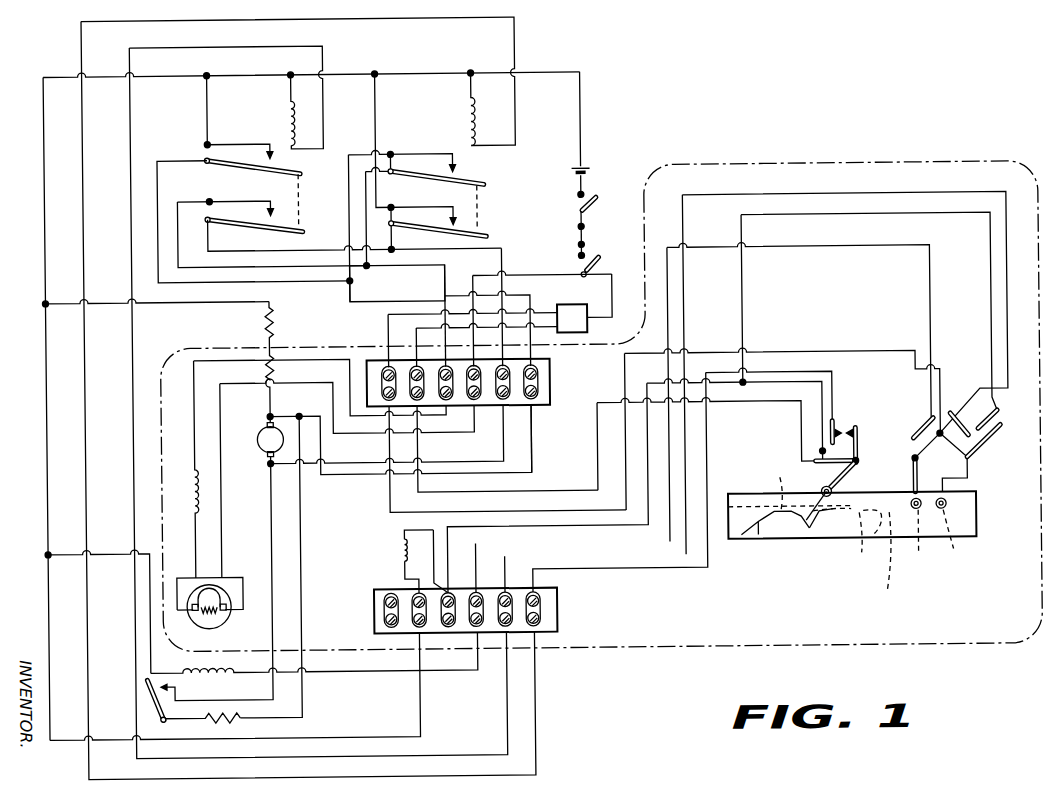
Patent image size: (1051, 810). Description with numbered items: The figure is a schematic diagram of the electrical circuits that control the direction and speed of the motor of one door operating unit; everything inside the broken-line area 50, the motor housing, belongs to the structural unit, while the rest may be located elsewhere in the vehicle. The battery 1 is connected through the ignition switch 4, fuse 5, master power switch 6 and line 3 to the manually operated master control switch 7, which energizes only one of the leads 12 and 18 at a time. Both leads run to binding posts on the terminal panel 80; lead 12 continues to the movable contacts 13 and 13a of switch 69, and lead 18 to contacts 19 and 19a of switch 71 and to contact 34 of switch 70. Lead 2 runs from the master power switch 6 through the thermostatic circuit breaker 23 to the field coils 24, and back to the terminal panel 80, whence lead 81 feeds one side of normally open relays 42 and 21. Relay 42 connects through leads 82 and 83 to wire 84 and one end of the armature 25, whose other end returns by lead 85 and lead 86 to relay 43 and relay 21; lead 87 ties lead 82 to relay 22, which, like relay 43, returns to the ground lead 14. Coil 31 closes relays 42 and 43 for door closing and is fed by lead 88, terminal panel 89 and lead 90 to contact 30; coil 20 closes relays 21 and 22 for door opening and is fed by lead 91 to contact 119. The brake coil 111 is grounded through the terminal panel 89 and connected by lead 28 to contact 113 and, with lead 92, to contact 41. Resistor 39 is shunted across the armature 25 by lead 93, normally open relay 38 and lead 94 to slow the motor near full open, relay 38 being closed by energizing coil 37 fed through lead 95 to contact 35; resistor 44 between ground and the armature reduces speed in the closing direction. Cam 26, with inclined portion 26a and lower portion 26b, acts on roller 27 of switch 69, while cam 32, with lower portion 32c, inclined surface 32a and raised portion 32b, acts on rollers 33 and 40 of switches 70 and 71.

The battery 1 is at (589, 168).
The lead 2 is at (541, 275).
The line 3 is at (613, 290).
The ignition switch 4 is at (599, 202).
The fuse 5 is at (578, 243).
The master power switch 6 is at (600, 258).
The master control switch 7 is at (573, 305).
The lead 12 is at (533, 328).
The movable contact 13 is at (858, 433).
The movable contact 13a is at (853, 463).
The ground lead 14 is at (433, 72).
The lead 18 is at (545, 313).
The contact 19 is at (962, 452).
The contact 19a is at (992, 450).
The coil 20 is at (292, 106).
The normally open relay 21 is at (257, 198).
The normally open relay 22 is at (258, 141).
The thermostatic circuit breaker 23 is at (228, 615).
The field coils 24 is at (192, 487).
The motor armature 25 is at (262, 445).
The cam 26 is at (976, 515).
The inclined portion 26a is at (795, 531).
The lower portion 26b is at (781, 520).
The cam-engaging roller 27 is at (821, 494).
The lead 28 is at (432, 540).
The contact 30 is at (833, 420).
The coil 31 is at (471, 105).
The cam 32 is at (723, 541).
The inclined surface 32a is at (863, 542).
The raised portion 32b is at (778, 490).
The lower portion 32c is at (902, 556).
The cam-engaging roller 33 is at (923, 535).
The contact 34 is at (913, 466).
The contact 35 is at (911, 436).
The energizing coil 37 is at (188, 667).
The normally open relay 38 is at (145, 695).
The resistor 39 is at (232, 717).
The cam-engaging roller 40 is at (953, 531).
The contact 41 is at (998, 428).
The normally open relay 42 is at (443, 153).
The normally open relay 43 is at (441, 206).
The resistor 44 is at (278, 322).
The motor housing 50 is at (1037, 610).
The switch 69 is at (861, 453).
The switch 70 is at (922, 407).
The switch 71 is at (979, 464).
The terminal panel 80 is at (551, 385).
The lead 81 is at (446, 286).
The lead 82 is at (351, 190).
The lead 83 is at (397, 300).
The wire 84 is at (532, 425).
The lead 85 is at (503, 448).
The lead 86 is at (503, 248).
The lead 87 is at (351, 296).
The lead 88 is at (425, 18).
The terminal panel 89 is at (556, 612).
The lead 90 is at (706, 440).
The lead 91 is at (332, 46).
The lead 92 is at (843, 218).
The lead 93 is at (300, 580).
The lead 94 is at (269, 570).
The lead 95 is at (856, 250).
The brake coil 111 is at (400, 548).
The contact 113 is at (815, 463).
The contact 119 is at (952, 416).